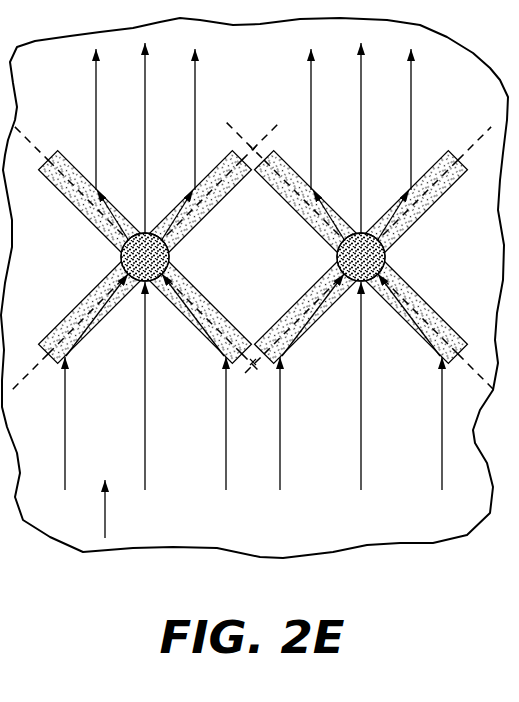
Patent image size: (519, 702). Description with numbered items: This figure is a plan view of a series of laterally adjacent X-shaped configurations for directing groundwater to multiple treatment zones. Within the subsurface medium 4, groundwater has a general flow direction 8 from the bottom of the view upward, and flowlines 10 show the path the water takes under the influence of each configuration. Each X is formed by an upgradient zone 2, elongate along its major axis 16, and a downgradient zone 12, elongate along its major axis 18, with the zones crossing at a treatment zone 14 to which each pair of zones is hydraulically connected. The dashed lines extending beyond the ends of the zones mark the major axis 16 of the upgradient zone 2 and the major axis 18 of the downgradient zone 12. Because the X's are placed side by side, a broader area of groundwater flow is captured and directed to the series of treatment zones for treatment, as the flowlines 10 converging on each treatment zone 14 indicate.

The upgradient zone 2 is at (63, 328).
The subsurface medium 4 is at (42, 83).
The general flow direction 8 is at (108, 514).
The flowlines 10 is at (145, 76).
The downgradient zone 12 is at (72, 195).
The treatment zone 14 is at (170, 257).
The major axis of upgradient zone 16 is at (25, 378).
The major axis of downgradient zone 18 is at (27, 137).